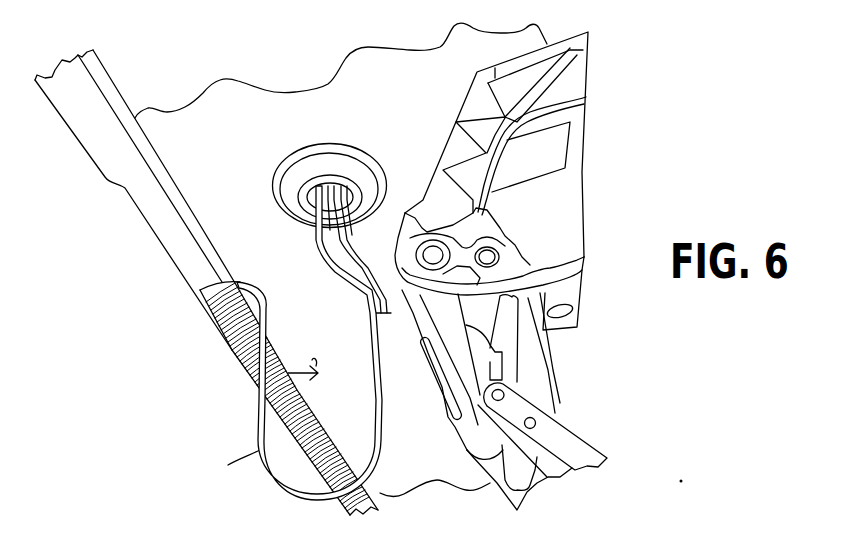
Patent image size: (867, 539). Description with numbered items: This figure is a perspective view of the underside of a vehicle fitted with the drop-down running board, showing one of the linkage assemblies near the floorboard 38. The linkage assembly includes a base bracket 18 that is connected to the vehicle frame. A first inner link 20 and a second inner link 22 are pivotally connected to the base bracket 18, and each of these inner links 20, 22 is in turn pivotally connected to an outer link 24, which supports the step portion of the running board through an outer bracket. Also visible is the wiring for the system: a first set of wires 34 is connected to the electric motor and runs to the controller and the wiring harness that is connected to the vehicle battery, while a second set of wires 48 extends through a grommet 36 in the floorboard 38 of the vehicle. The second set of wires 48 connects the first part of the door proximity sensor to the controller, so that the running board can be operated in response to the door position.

The base bracket 18 is at (470, 107).
The first inner link 20 is at (545, 373).
The second inner link 22 is at (460, 360).
The outer link 24 is at (570, 442).
The first set of wires 34 is at (355, 262).
The grommet 36 is at (350, 152).
The floorboard 38 is at (258, 87).
The second set of wires 48 is at (262, 448).